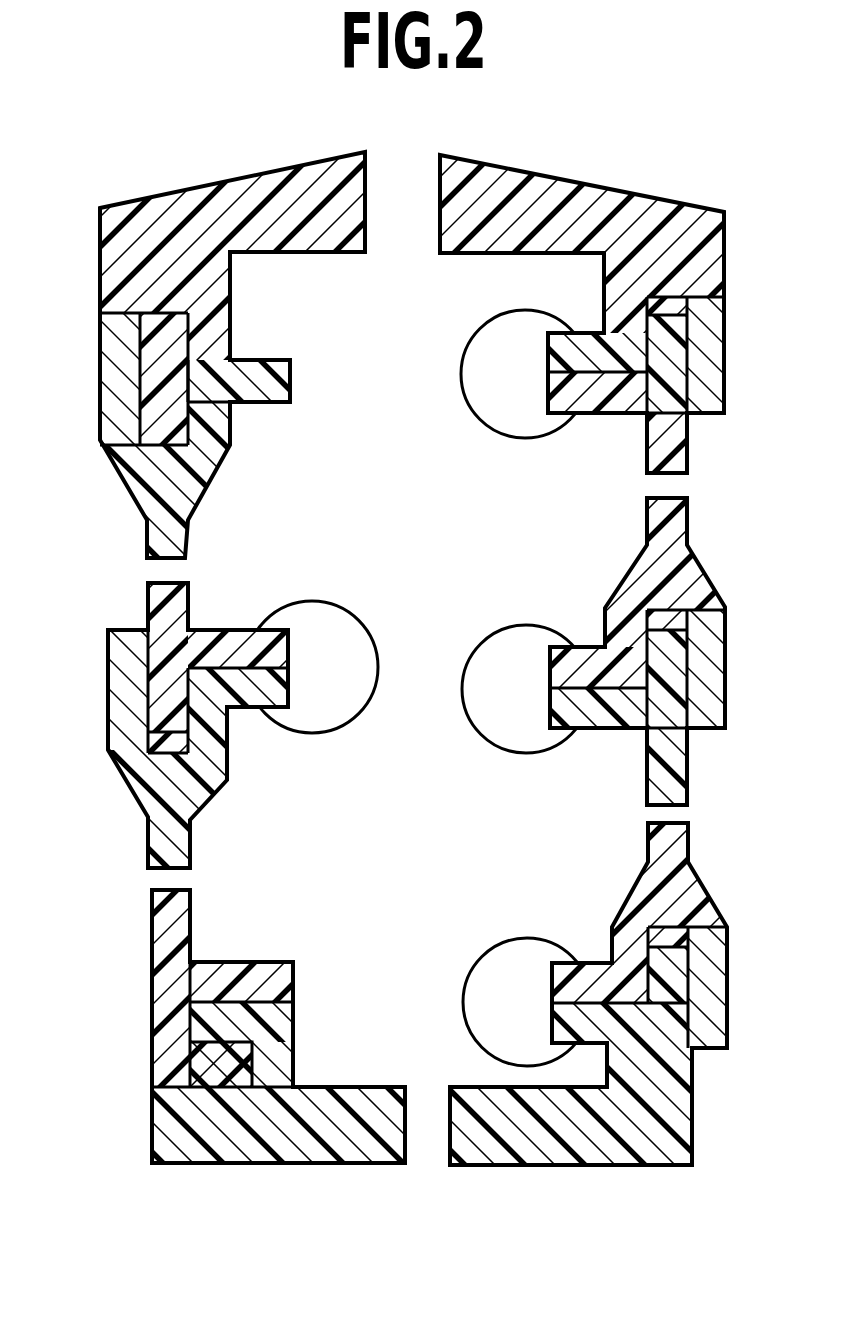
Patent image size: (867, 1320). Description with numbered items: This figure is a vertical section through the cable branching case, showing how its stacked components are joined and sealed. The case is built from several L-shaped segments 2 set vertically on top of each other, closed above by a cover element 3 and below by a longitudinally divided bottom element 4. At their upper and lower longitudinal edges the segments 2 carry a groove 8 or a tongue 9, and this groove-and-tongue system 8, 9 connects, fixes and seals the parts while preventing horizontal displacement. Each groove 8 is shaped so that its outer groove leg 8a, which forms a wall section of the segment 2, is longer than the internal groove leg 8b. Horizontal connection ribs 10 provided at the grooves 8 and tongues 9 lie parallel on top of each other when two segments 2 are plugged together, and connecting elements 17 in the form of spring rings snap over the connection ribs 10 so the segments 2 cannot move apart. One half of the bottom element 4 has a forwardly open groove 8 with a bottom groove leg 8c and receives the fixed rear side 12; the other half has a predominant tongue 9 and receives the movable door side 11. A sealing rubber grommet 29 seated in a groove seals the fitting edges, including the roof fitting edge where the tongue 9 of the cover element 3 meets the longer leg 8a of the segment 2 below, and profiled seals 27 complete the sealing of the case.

The L-shaped segment 2 is at (162, 538).
The cover element 3 is at (595, 184).
The bottom element 4 is at (693, 1116).
The groove 8 is at (140, 406).
The groove leg 8a is at (118, 327).
The internal groove leg 8b is at (200, 735).
The bottom groove leg 8c is at (228, 1025).
The tongue 9 is at (205, 341).
The connection rib 10 is at (280, 370).
The movable door side 11 is at (303, 1186).
The fixed rear side 12 is at (575, 1190).
The connecting element 17 is at (352, 596).
The profiled seal 27 is at (677, 302).
The sealing rubber grommet 29 is at (140, 360).